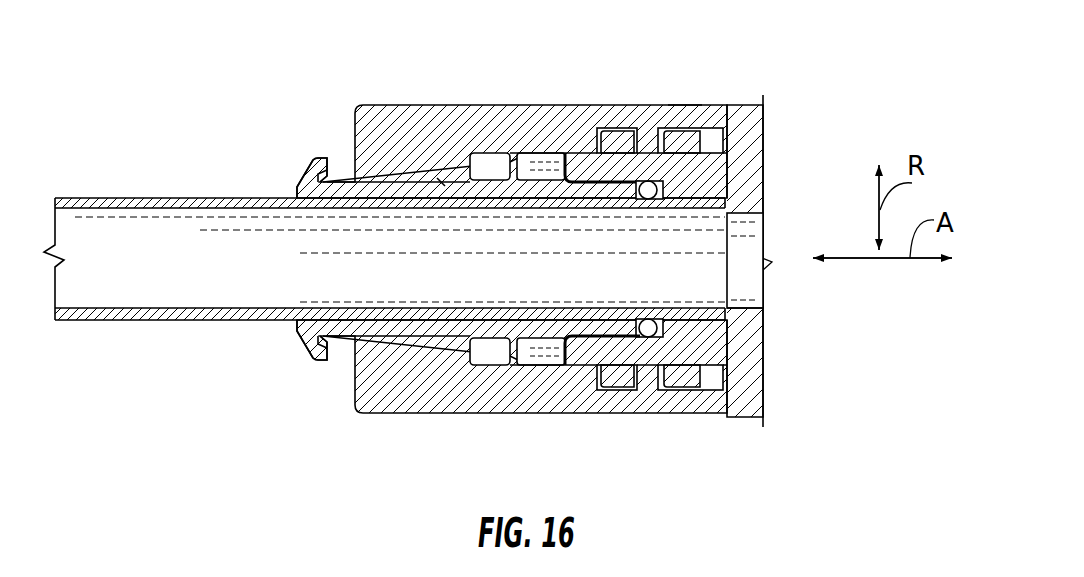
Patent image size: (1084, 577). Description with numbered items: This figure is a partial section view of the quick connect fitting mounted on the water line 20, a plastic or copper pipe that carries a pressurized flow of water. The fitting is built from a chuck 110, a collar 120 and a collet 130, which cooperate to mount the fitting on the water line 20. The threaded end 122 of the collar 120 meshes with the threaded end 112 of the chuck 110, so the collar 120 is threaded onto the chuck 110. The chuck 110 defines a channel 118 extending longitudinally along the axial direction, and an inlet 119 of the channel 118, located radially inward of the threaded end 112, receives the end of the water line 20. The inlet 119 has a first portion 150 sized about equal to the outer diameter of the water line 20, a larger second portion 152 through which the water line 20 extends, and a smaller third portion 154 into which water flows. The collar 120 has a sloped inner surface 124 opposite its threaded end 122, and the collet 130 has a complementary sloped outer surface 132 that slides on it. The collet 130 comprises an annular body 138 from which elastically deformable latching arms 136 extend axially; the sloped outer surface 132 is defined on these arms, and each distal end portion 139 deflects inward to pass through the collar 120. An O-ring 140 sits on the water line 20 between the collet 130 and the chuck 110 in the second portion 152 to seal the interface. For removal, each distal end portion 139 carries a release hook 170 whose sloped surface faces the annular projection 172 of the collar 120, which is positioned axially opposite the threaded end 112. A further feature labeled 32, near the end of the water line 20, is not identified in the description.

The water line 20 is at (125, 197).
The tube end 32 is at (729, 238).
The chuck 110 is at (748, 105).
The threaded end 112 is at (618, 123).
The channel 118 is at (741, 288).
The inlet 119 is at (578, 352).
The collar 120 is at (426, 105).
The threaded end 122 is at (684, 104).
The sloped inner surface 124 is at (439, 182).
The collet 130 is at (510, 186).
The sloped outer surface 132 is at (369, 164).
The latching arms 136 is at (388, 180).
The annular body 138 is at (572, 152).
The distal end portion 139 is at (305, 355).
The O-ring 140 is at (647, 322).
The first portion 150 is at (700, 326).
The second portion 152 is at (622, 349).
The third portion 154 is at (747, 314).
The release hook 170 is at (317, 170).
The annular projection 172 is at (337, 172).